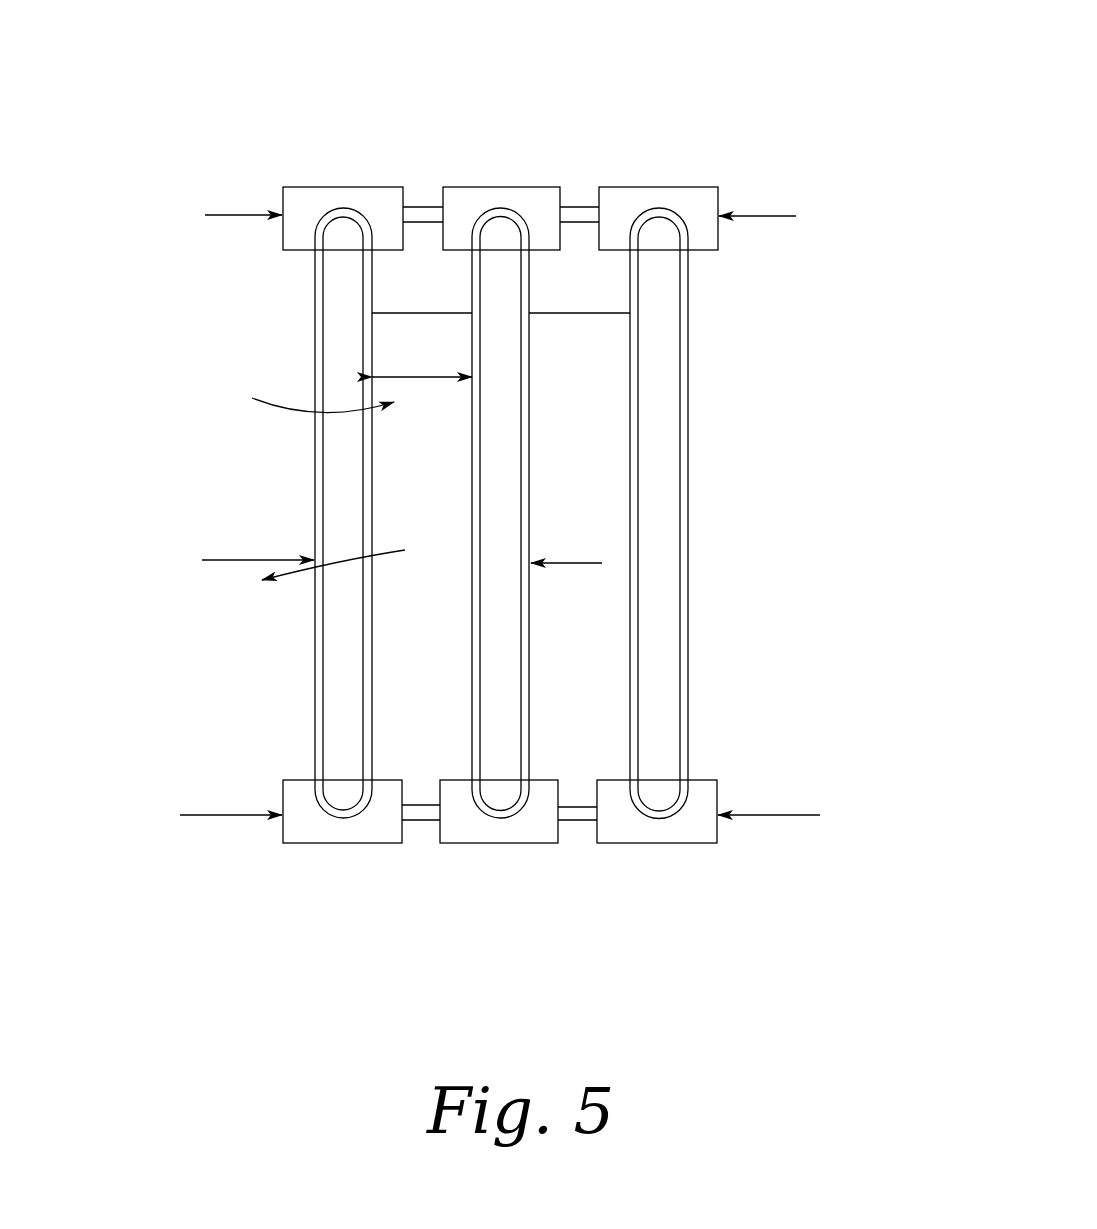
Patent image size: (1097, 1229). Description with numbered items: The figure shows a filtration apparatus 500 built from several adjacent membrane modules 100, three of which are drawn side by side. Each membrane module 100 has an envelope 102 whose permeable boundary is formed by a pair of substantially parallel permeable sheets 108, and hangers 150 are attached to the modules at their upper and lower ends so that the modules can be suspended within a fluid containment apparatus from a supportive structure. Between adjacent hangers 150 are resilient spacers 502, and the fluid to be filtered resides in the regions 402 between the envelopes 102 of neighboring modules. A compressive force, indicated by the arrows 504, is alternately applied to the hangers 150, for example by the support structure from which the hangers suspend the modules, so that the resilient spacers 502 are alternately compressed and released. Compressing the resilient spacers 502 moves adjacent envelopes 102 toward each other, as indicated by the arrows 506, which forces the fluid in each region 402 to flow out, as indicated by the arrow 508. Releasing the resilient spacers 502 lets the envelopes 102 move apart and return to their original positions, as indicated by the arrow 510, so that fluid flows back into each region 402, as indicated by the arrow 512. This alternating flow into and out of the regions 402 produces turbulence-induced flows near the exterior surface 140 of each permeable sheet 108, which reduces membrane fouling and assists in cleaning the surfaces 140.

The filtration apparatus 500 is at (760, 88).
The membrane module 100 is at (637, 138).
The hanger 150 is at (315, 187).
The resilient spacer 502 is at (420, 207).
The arrows indicating compressive force 504 is at (220, 215).
The envelope 102 is at (531, 420).
The permeable sheet 108 is at (315, 460).
The exterior surface 140 is at (470, 530).
The arrow indicating envelope separation 510 is at (400, 375).
The region 402 is at (438, 661).
The arrows indicating envelope movement 506 is at (220, 560).
The arrow indicating outward fluid flow 508 is at (383, 560).
The arrow indicating inward fluid flow 512 is at (283, 405).